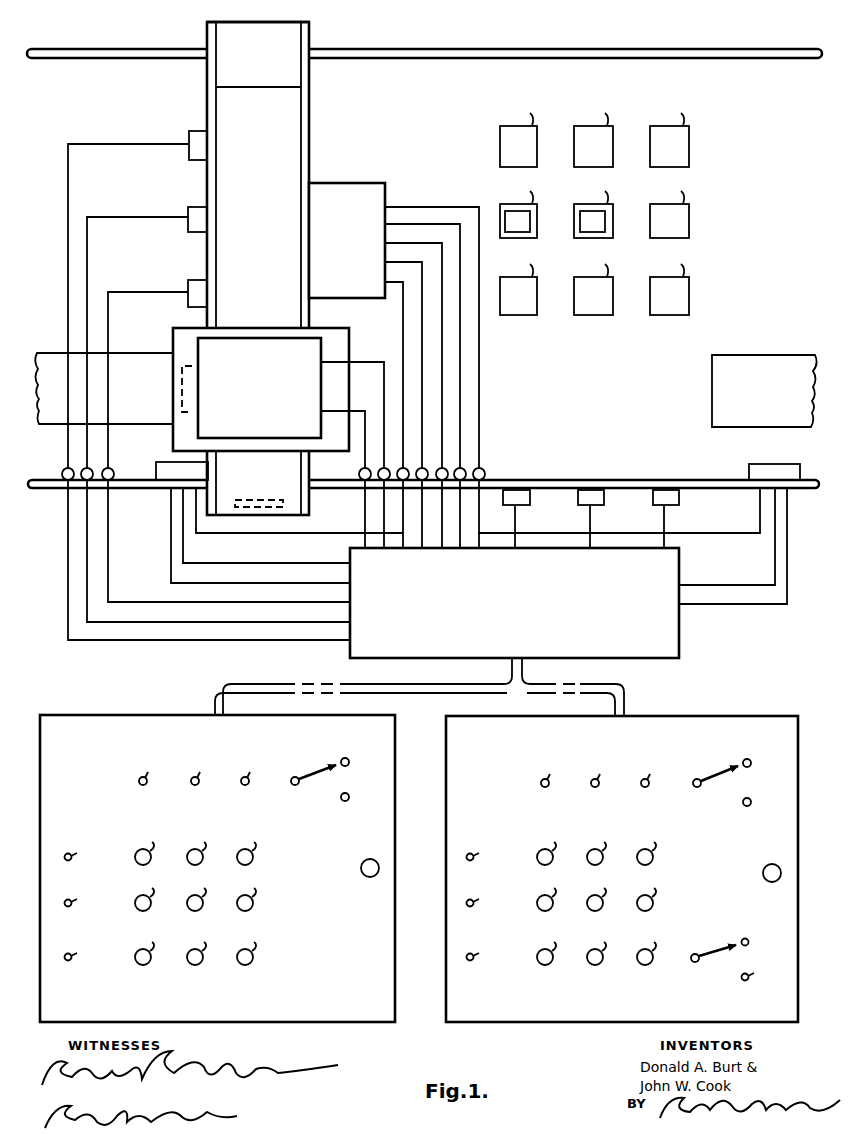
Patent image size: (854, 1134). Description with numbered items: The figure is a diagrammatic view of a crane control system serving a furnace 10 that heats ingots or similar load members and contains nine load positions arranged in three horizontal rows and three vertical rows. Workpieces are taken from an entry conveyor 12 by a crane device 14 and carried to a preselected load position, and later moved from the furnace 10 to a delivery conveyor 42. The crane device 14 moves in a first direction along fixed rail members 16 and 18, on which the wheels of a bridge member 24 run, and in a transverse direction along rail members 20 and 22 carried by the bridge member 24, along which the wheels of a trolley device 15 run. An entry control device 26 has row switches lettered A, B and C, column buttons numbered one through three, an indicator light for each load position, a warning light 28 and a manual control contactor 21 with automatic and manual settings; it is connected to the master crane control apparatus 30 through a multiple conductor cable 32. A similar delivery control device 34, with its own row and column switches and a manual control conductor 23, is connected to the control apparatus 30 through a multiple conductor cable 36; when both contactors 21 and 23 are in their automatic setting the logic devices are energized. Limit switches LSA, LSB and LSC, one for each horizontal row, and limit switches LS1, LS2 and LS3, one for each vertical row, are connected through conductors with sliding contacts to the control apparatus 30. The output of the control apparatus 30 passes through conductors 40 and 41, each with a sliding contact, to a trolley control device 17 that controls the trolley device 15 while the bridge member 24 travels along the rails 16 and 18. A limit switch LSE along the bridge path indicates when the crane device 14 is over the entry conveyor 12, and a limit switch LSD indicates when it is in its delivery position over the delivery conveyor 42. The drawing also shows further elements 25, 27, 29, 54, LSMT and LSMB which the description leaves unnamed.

The furnace 10 is at (750, 121).
The entry conveyor 12 is at (58, 353).
The crane device 14 is at (266, 184).
The trolley device 15 is at (351, 333).
The rail member 16 is at (521, 49).
The trolley control device 17 is at (242, 328).
The rail member 18 is at (555, 480).
The rail member 20 is at (300, 117).
The manual control contactor 21 is at (317, 771).
The rail member 22 is at (217, 118).
The manual control conductor 23 is at (719, 772).
The bridge member 24 is at (265, 22).
The delivery switch 25 is at (747, 945).
The entry control device 26 is at (217, 858).
The entry indicator 27 is at (757, 976).
The warning light 28 is at (362, 863).
The warning lamp 29 is at (764, 869).
The crane control apparatus 30 is at (680, 648).
The multiple conductor cable 32 is at (218, 689).
The delivery control device 34 is at (622, 857).
The multiple conductor cable 36 is at (624, 690).
The conductor 40 is at (364, 541).
The conductor 41 is at (385, 541).
The delivery conveyor 42 is at (790, 355).
The bridge control device 54 is at (363, 183).
The limit switch LSA is at (190, 131).
The limit switch LSB is at (191, 207).
The limit switch LSC is at (191, 280).
The limit switch LSD is at (789, 462).
The limit switch LSE is at (164, 462).
The trolley master limit switch LSMT is at (182, 389).
The bridge master limit switch LSMB is at (284, 503).
The limit switch LS1 is at (521, 505).
The limit switch LS2 is at (597, 505).
The limit switch LS3 is at (673, 505).